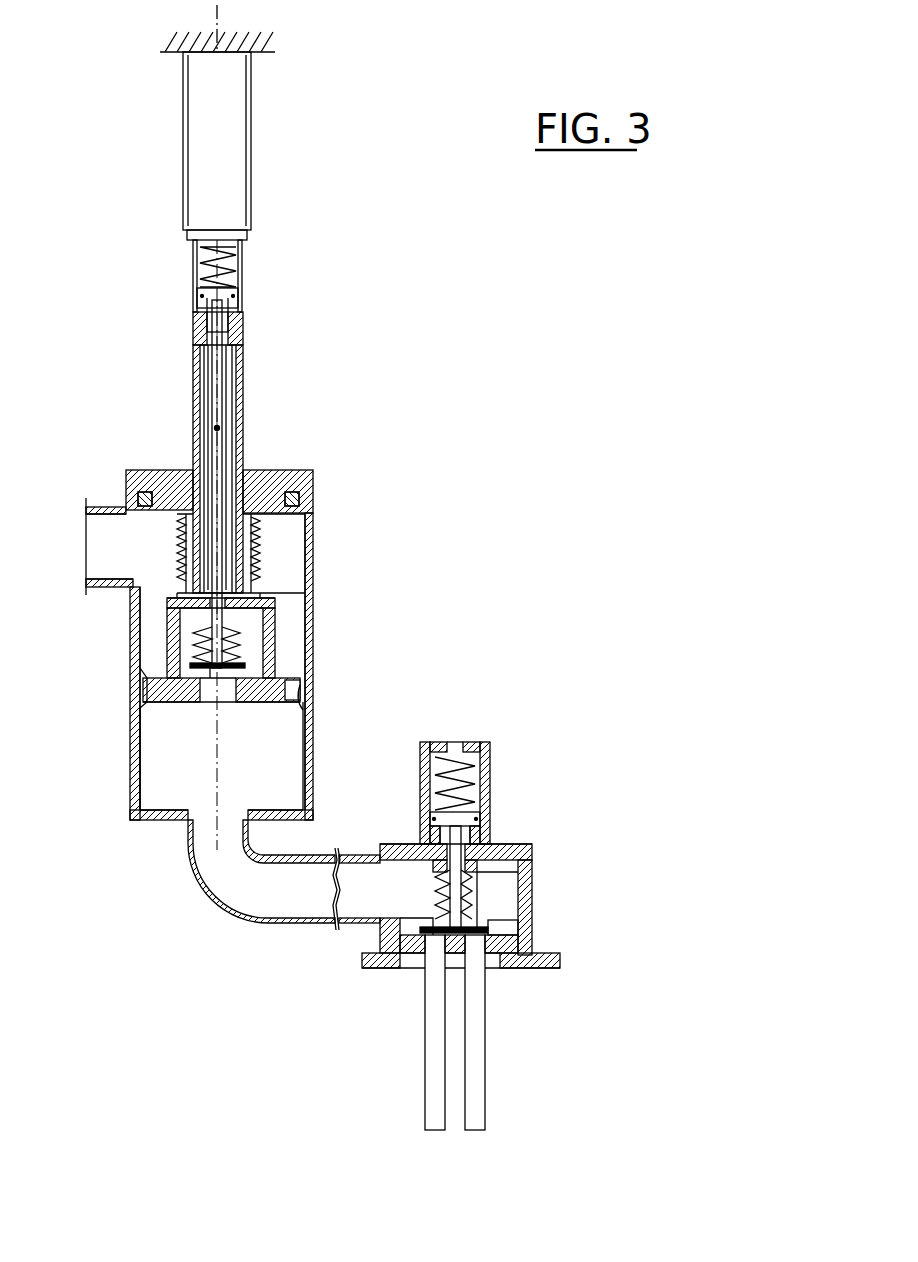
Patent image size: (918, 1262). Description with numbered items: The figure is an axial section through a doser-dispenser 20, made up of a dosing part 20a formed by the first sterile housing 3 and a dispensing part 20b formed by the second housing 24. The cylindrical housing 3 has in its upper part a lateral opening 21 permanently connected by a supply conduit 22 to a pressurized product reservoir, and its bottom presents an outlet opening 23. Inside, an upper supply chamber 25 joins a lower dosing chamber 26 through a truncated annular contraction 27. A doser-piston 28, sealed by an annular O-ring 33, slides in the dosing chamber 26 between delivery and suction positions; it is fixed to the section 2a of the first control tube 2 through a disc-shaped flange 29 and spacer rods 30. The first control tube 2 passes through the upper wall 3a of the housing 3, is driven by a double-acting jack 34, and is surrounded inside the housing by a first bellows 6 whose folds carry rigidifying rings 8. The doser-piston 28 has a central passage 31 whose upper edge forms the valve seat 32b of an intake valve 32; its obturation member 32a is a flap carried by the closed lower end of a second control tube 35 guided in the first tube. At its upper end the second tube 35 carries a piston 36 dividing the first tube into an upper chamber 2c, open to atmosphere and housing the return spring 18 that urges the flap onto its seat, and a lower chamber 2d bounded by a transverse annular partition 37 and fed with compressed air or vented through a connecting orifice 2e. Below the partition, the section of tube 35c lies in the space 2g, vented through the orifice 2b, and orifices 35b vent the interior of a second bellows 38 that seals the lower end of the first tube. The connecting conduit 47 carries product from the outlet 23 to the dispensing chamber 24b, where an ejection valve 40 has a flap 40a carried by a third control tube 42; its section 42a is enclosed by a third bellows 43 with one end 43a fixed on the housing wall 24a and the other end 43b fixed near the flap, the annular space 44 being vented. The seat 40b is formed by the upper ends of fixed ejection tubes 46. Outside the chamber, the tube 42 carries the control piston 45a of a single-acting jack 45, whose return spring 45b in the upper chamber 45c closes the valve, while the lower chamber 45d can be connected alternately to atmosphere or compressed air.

The first control tube 2 is at (243, 388).
The section of the first control tube 2a is at (183, 590).
The transverse orifice 2b is at (195, 356).
The upper chamber 2c is at (238, 248).
The lower chamber 2d is at (240, 306).
The connecting orifice 2e is at (193, 305).
The space of the first tube 2g is at (208, 385).
The first sterile housing 3 is at (313, 577).
The upper wall of the housing 3a is at (318, 473).
The first bellows 6 is at (258, 542).
The rigidifying ring 8 is at (468, 892).
The return spring 18 is at (235, 270).
The doser-dispenser 20 is at (440, 718).
The dosing part 20a is at (300, 500).
The dispensing part 20b is at (545, 1161).
The lateral opening 21 is at (65, 545).
The supply conduit 22 is at (118, 505).
The outlet opening 23 is at (230, 830).
The second housing 24 is at (532, 877).
The housing wall 24a is at (500, 846).
The dispensing chamber 24b is at (530, 953).
The upper supply chamber 25 is at (283, 557).
The lower dosing chamber 26 is at (295, 740).
The truncated annular contraction 27 is at (310, 673).
The doser-piston 28 is at (300, 680).
The transverse flange 29 is at (276, 598).
The spacer rods 30 is at (170, 645).
The central passage 31 is at (190, 700).
The intake valve 32 is at (118, 704).
The obturation member 32a is at (212, 683).
The valve seat 32b is at (292, 665).
The annular O-ring 33 is at (128, 700).
The double-acting jack 34 is at (232, 168).
The second control tube 35 is at (228, 462).
The orifices 35b is at (217, 428).
The section of tube 35c is at (218, 445).
The piston 36 is at (240, 296).
The transverse annular partition 37 is at (238, 330).
The second bellows 38 is at (245, 638).
The ejection valve 40 is at (495, 983).
The obturation member 40a is at (500, 932).
The seat of the ejection valve 40b is at (492, 982).
The third control tube 42 is at (490, 850).
The section of the third control tube 42a is at (407, 950).
The third bellows 43 is at (425, 930).
The end of the third bellows 43a is at (433, 870).
The other end of the third bellows 43b is at (507, 900).
The annular space 44 is at (407, 938).
The single-acting jack 45 is at (472, 742).
The control piston 45a is at (461, 835).
The return spring 45b is at (470, 775).
The upper chamber 45c is at (465, 815).
The lower chamber 45d is at (412, 835).
The ejection tubes 46 is at (437, 1060).
The connecting conduit 47 is at (303, 920).